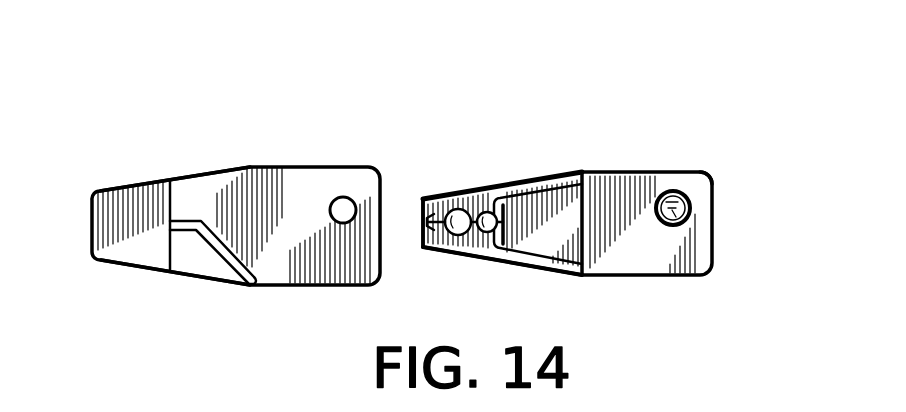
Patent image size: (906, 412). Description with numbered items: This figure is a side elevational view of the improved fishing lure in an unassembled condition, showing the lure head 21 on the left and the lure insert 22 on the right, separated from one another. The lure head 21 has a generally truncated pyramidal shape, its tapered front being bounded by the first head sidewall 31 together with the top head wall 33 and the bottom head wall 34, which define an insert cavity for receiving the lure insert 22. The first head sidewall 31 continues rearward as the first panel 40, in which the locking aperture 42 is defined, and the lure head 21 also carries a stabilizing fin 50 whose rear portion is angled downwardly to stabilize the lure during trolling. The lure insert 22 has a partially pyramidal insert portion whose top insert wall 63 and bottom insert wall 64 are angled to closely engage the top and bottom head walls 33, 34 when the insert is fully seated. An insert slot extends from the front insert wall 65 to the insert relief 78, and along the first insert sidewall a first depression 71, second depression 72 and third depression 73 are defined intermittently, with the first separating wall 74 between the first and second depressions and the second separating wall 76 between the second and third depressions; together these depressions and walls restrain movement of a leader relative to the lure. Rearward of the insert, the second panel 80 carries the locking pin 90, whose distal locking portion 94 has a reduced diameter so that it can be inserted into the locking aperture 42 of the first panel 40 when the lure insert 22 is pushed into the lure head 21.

The lure head 21 is at (250, 138).
The lure insert 22 is at (573, 133).
The first head sidewall 31 is at (140, 234).
The top head wall 33 is at (130, 185).
The bottom head wall 34 is at (125, 268).
The first panel 40 is at (307, 197).
The locking aperture 42 is at (347, 199).
The stabilizing fin 50 is at (203, 236).
The top insert wall 63 is at (518, 184).
The bottom insert wall 64 is at (562, 272).
The front insert wall 65 is at (422, 221).
The first depression 71 is at (422, 233).
The second depression 72 is at (462, 238).
The third depression 73 is at (482, 238).
The first separating wall 74 is at (447, 210).
The second separating wall 76 is at (476, 214).
The insert relief 78 is at (562, 212).
The second panel 80 is at (705, 179).
The locking pin 90 is at (683, 218).
The locking portion 94 is at (684, 226).